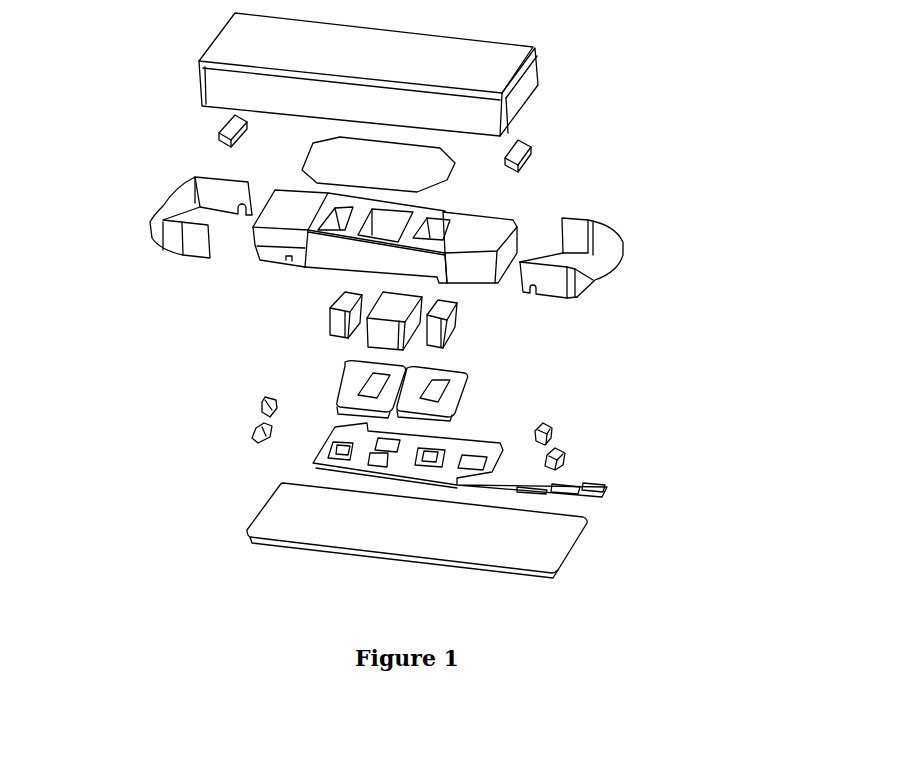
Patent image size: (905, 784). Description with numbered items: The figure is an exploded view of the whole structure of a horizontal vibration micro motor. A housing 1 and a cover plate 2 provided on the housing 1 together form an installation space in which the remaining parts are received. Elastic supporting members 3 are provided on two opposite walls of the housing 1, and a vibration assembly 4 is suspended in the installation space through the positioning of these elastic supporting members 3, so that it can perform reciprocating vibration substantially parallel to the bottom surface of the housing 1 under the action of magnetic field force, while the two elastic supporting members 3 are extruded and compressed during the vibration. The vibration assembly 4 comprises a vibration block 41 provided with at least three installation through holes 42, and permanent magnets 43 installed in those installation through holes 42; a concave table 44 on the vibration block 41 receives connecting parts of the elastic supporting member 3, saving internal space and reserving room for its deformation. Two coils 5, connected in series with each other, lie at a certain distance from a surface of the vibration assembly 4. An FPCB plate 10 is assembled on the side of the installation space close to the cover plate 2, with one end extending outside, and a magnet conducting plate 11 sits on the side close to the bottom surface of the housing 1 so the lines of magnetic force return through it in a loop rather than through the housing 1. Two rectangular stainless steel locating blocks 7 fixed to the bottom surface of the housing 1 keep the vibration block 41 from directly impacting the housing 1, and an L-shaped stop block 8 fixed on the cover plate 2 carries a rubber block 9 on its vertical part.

The housing 1 is at (523, 90).
The cover plate 2 is at (547, 522).
The elastic supporting member 3 is at (592, 280).
The vibration assembly 4 is at (465, 209).
The coil 5 is at (367, 370).
The locating block 7 is at (530, 153).
The L-shaped stop block 8 is at (567, 457).
The rubber block 9 is at (552, 425).
The FPCB plate 10 is at (443, 443).
The magnet conducting plate 11 is at (315, 162).
The vibration block 41 is at (335, 252).
The installation through hole 42 is at (307, 240).
The permanent magnet 43 is at (347, 300).
The concave table 44 is at (460, 272).